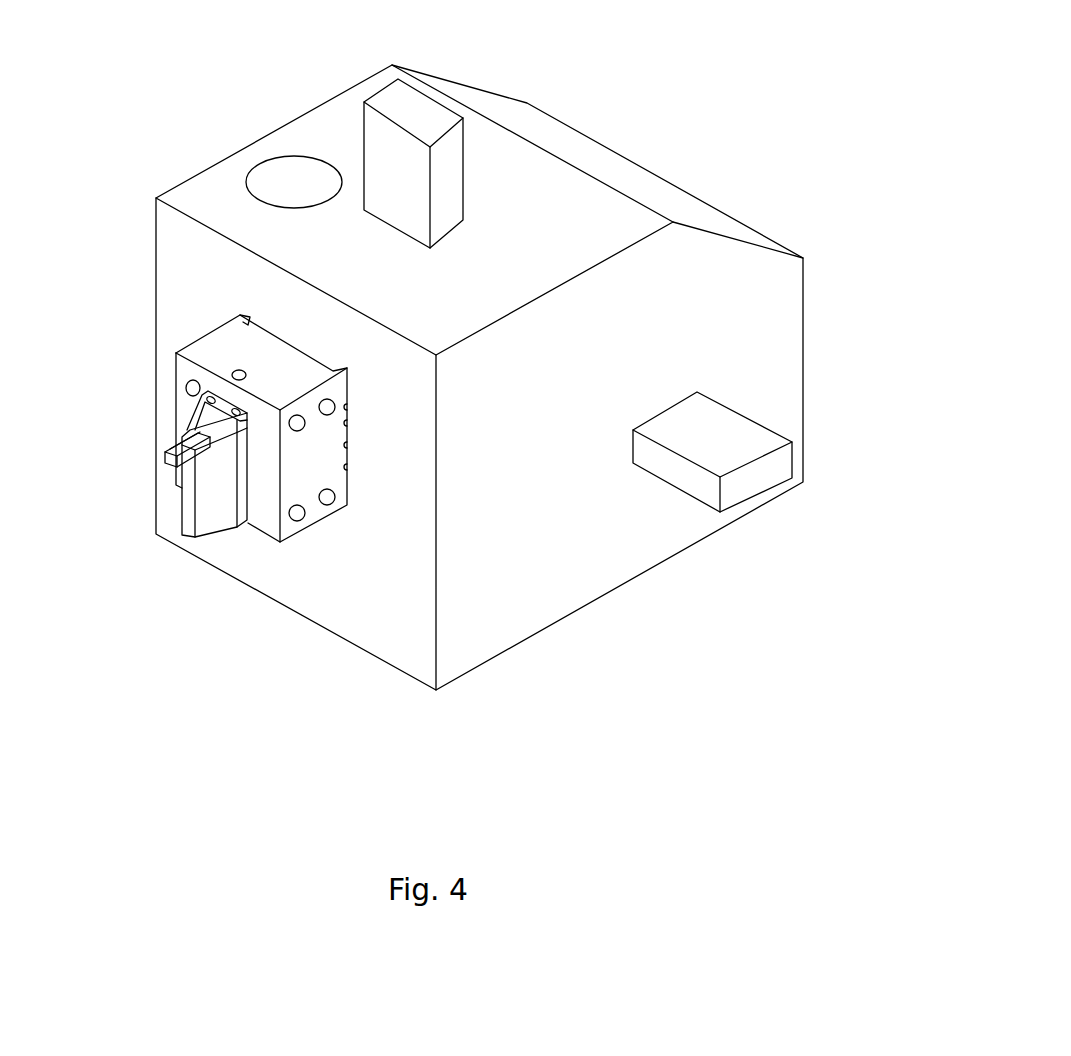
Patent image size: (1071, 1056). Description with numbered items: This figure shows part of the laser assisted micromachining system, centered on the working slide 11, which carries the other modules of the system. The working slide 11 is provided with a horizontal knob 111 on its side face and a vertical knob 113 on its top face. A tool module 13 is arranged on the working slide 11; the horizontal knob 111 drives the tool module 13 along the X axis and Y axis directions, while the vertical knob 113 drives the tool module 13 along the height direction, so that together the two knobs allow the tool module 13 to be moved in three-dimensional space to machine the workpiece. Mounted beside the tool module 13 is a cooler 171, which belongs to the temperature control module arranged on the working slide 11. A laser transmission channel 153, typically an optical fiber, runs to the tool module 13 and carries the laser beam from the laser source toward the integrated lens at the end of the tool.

The working slide 11 is at (627, 142).
The horizontal knob 111 is at (705, 430).
The vertical knob 113 is at (410, 113).
The tool module 13 is at (162, 457).
The laser transmission channel 153 is at (187, 433).
The cooler 171 is at (233, 353).